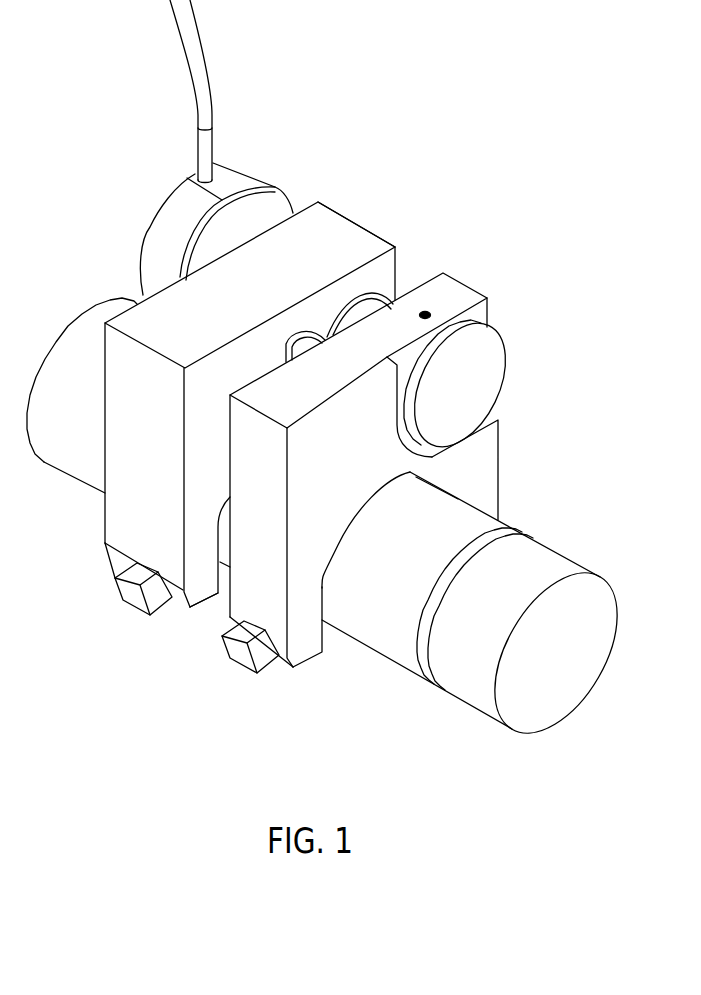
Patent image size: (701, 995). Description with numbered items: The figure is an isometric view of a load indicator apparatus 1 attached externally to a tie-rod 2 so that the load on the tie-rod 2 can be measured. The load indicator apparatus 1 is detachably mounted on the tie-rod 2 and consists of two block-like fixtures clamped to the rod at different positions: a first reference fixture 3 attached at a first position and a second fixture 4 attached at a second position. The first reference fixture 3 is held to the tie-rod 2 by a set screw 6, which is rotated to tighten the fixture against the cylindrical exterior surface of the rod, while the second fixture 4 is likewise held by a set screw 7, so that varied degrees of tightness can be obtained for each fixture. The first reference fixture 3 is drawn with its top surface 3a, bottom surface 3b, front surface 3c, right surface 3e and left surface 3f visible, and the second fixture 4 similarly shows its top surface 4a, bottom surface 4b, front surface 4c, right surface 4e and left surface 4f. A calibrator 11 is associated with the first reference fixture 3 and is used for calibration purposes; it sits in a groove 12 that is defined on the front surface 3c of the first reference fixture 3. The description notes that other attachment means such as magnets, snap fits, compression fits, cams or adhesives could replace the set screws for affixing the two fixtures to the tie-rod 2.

The load indicator apparatus 1 is at (408, 57).
The tie-rod 2 is at (538, 705).
The first reference fixture 3 is at (500, 437).
The top surface 3a is at (448, 290).
The bottom surface 3b is at (308, 660).
The front surface 3c is at (483, 489).
The right surface 3e is at (490, 303).
The left surface 3f is at (243, 608).
The second fixture 4 is at (115, 513).
The top surface 4a is at (305, 222).
The bottom surface 4b is at (190, 610).
The front surface 4c is at (387, 263).
The right surface 4e is at (357, 222).
The left surface 4f is at (128, 535).
The set screw 6 is at (267, 666).
The set screw 7 is at (140, 605).
The calibrator 11 is at (482, 370).
The groove 12 is at (492, 418).